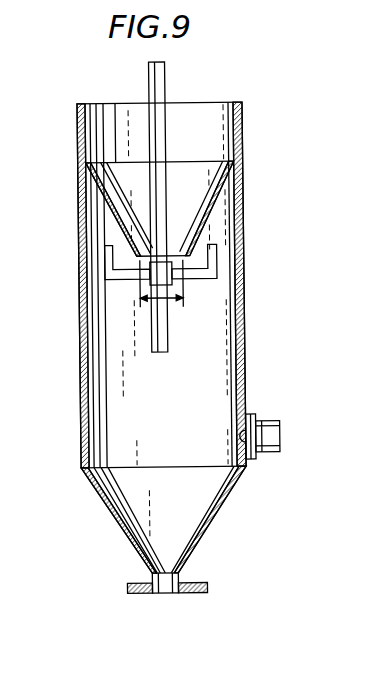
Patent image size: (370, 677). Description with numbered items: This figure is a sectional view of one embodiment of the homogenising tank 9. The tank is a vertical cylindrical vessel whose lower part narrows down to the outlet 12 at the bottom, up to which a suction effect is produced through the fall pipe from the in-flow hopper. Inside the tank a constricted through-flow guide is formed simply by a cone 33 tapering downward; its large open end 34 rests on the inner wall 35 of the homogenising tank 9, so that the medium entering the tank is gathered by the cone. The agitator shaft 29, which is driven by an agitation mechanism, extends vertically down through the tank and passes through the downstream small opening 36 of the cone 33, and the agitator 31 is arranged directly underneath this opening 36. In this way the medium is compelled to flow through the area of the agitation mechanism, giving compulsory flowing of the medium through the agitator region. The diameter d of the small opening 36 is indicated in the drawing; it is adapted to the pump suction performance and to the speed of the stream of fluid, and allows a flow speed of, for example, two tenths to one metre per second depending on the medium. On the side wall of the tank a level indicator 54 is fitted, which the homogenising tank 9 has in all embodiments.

The homogenising tank 9 is at (77, 358).
The outlet 12 is at (180, 580).
The agitator shaft 29 is at (165, 80).
The agitator 31 is at (210, 279).
The cone 33 is at (208, 218).
The large open end 34 is at (242, 162).
The inner wall 35 is at (233, 333).
The small opening 36 is at (168, 260).
The level indicator 54 is at (266, 424).
The diameter of the small opening d is at (158, 302).